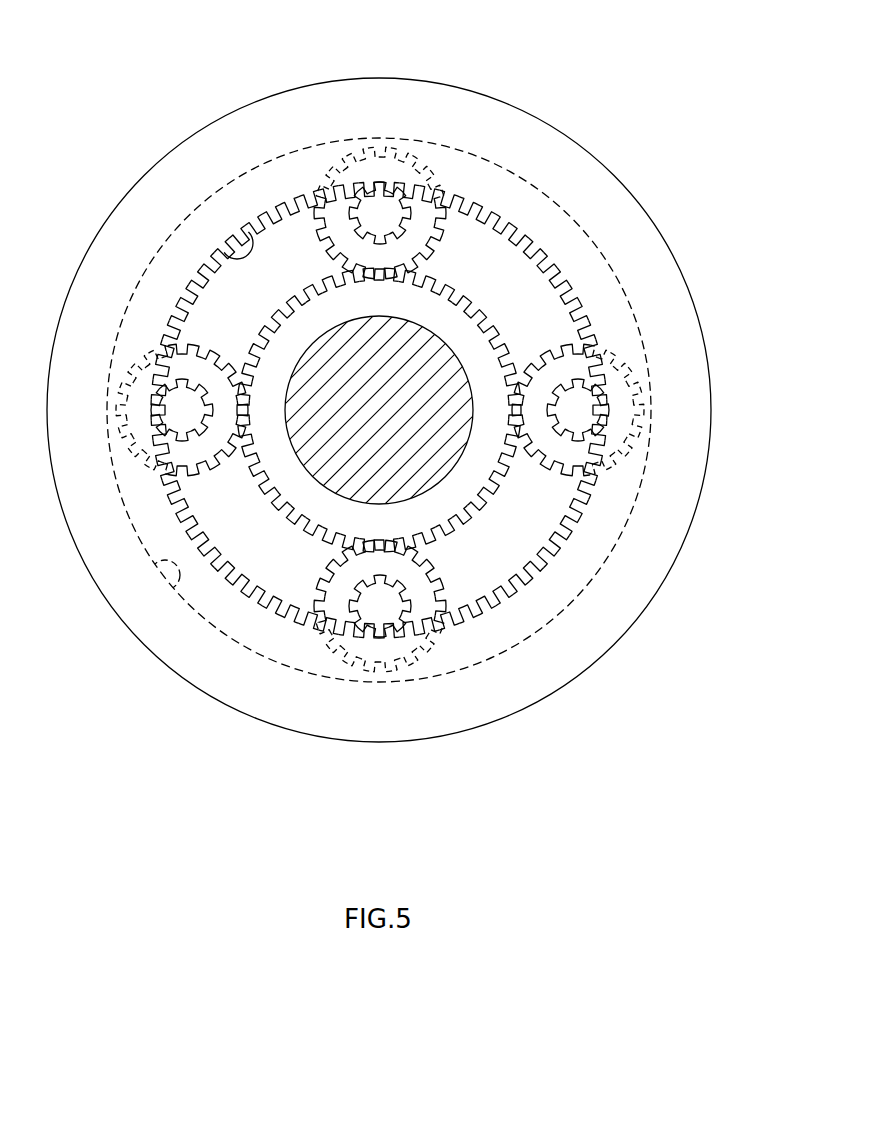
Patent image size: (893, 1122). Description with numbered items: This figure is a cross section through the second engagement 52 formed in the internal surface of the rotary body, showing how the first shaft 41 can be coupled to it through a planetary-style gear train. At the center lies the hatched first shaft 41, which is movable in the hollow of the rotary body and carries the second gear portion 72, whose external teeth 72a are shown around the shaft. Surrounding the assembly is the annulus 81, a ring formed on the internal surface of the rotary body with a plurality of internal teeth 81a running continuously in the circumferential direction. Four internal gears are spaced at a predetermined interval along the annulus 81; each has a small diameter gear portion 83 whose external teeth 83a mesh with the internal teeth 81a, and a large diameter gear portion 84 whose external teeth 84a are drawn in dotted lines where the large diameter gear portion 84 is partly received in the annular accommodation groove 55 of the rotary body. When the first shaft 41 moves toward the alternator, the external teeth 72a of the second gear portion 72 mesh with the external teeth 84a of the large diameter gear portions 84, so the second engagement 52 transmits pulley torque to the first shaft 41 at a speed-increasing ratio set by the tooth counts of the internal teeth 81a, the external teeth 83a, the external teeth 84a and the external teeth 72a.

The first shaft 41 is at (428, 470).
The second engagement 52 is at (560, 118).
The accommodation groove 55 is at (150, 585).
The second gear portion 72 is at (479, 349).
The external teeth of the second gear portion 72a is at (462, 297).
The annulus 81 is at (344, 391).
The internal teeth of the annulus 81a is at (218, 250).
The small diameter gear portion 83 is at (378, 208).
The external teeth of the small diameter gear portion 83a is at (368, 360).
The large diameter gear portion 84 is at (420, 207).
The external teeth of the large diameter gear portion 84a is at (440, 237).